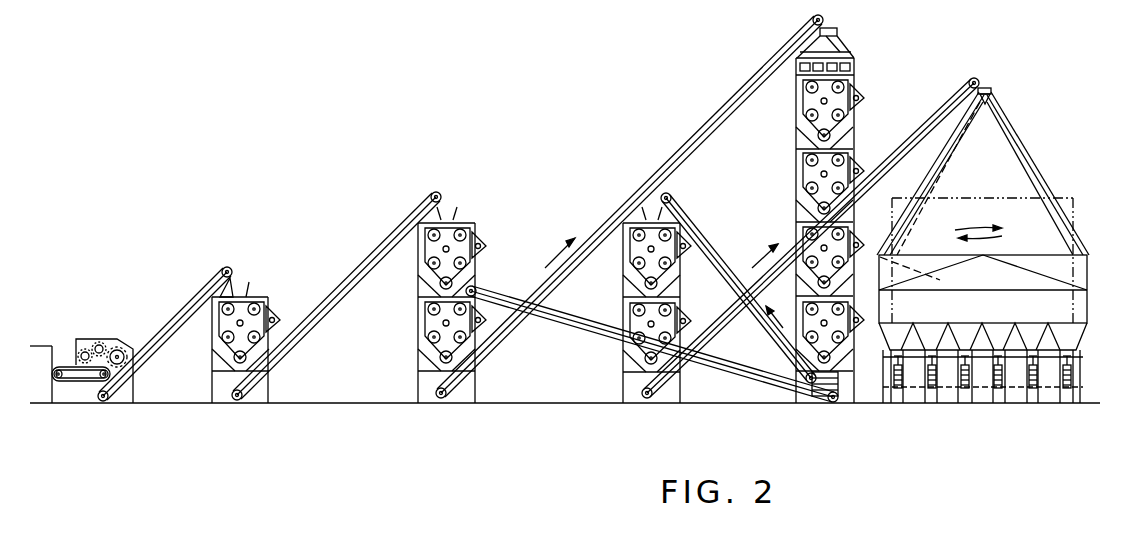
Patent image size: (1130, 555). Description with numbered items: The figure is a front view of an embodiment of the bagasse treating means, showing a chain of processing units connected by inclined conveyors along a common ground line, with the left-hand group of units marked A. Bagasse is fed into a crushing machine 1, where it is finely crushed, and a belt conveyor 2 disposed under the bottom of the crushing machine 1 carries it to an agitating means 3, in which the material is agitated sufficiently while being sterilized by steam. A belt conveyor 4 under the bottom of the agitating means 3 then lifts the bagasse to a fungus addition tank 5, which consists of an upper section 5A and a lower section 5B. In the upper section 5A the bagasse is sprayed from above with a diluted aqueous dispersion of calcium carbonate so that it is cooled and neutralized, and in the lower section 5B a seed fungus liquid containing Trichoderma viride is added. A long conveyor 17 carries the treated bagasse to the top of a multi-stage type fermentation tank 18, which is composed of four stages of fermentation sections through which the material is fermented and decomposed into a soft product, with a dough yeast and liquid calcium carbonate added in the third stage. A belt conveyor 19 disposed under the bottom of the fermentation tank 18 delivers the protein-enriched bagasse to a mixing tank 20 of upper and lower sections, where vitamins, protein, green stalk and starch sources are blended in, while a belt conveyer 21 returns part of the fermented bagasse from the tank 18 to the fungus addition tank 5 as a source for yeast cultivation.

The crushing machine 1 is at (118, 346).
The belt conveyor 2 is at (188, 310).
The agitating means 3 is at (273, 287).
The belt conveyor 4 is at (374, 248).
The fungus addition tank 5 is at (439, 301).
The upper section 5A is at (418, 268).
The lower section 5B is at (418, 342).
The conveyor 17 is at (728, 106).
The multi-stage type fermentation tank 18 is at (890, 66).
The belt conveyor 19 is at (697, 233).
The mixing tank 20 is at (722, 304).
The belt conveyer 21 is at (580, 328).
The processing section A is at (360, 156).